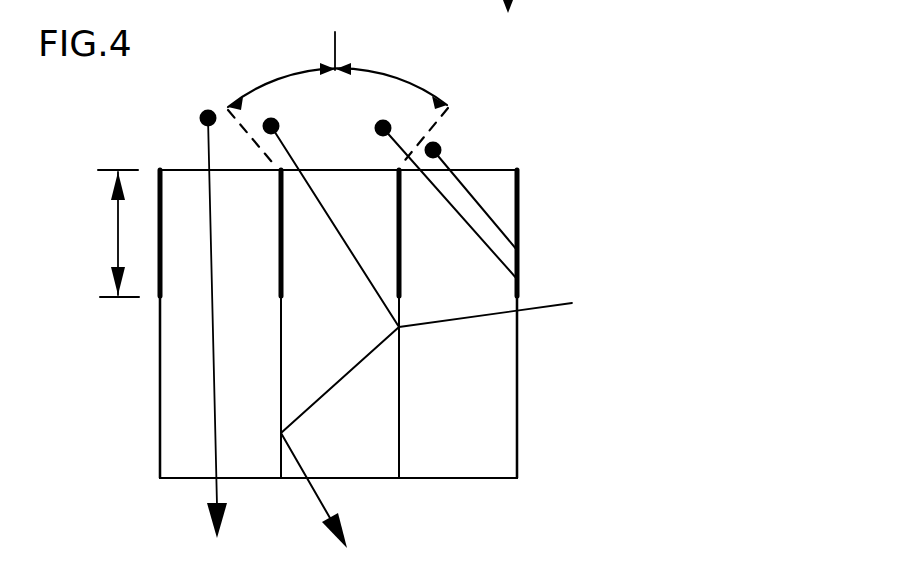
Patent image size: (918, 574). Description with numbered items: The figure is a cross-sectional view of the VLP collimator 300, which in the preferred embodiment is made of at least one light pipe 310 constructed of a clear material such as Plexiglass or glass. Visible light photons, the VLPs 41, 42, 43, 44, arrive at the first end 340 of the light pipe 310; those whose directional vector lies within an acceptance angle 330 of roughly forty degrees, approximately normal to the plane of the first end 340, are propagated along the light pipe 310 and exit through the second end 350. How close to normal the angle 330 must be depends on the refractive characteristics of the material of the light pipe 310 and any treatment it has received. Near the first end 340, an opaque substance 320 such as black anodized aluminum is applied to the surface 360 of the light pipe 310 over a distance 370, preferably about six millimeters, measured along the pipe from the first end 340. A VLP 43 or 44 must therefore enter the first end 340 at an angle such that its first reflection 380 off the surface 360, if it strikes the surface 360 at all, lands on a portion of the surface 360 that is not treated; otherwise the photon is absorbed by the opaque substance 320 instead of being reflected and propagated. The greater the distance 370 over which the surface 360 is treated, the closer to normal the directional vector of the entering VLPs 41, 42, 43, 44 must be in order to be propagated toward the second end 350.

The VLP collimator 300 is at (107, 388).
The light pipe 310 is at (494, 361).
The opaque substance 320 is at (517, 215).
The acceptance angle 330 is at (374, 70).
The first end 340 is at (495, 165).
The second end 350 is at (496, 478).
The surface 360 is at (517, 418).
The distance 370 is at (100, 233).
The first reflection 380 is at (510, 308).
The VLP 41 is at (467, 190).
The VLP 42 is at (401, 160).
The VLP 43 is at (207, 155).
The VLP 44 is at (287, 157).